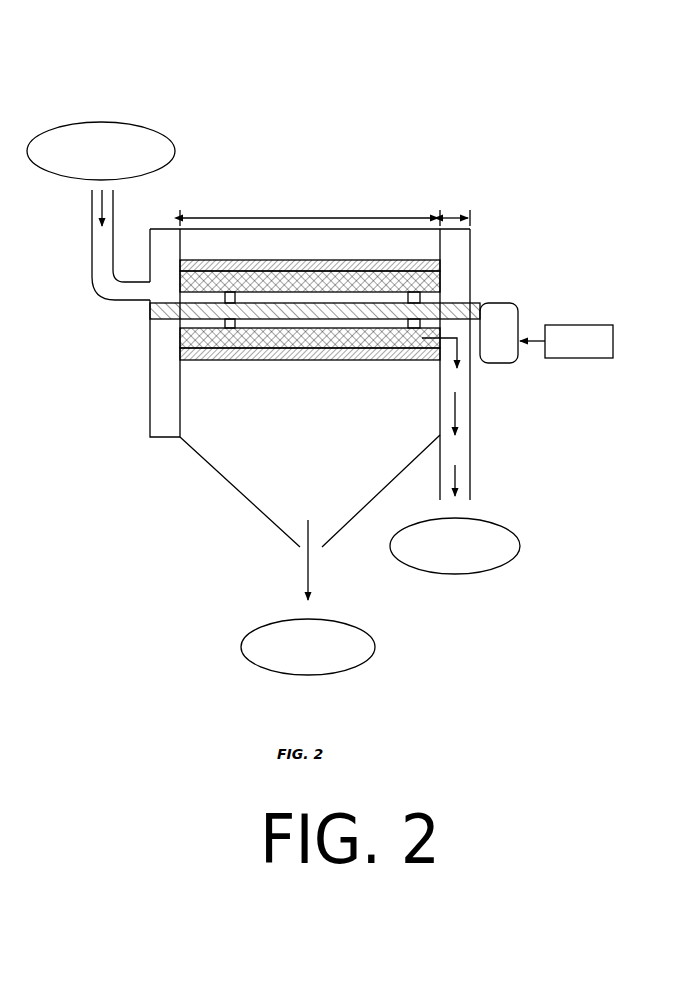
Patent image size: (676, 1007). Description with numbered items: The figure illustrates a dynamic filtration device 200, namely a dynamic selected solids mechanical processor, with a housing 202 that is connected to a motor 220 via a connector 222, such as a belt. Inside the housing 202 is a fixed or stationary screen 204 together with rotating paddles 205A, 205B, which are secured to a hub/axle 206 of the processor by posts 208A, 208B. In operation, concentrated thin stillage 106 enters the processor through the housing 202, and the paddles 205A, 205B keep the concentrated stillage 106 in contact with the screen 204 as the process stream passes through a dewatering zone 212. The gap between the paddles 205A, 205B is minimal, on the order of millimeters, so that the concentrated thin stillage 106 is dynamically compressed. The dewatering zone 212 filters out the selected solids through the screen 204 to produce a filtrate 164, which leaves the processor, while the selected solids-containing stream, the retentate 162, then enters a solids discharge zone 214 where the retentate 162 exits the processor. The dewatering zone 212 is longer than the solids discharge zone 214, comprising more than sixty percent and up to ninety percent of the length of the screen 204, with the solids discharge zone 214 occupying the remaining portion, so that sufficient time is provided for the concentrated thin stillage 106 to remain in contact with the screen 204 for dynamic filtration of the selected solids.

The dewatering system 200 is at (562, 55).
The housing 202 is at (165, 227).
The screen 204 is at (442, 268).
The paddle 205A is at (442, 286).
The paddle 205B is at (180, 338).
The hub/axle 206 is at (140, 310).
The post 208A is at (228, 319).
The post 208B is at (413, 319).
The dewatering zone 212 is at (238, 217).
The solids discharge zone 214 is at (459, 212).
The motor 220 is at (592, 325).
The connector 222 is at (517, 303).
The concentrated thin stillage 106 is at (62, 123).
The retentate 162 is at (497, 525).
The filtrate 164 is at (345, 625).